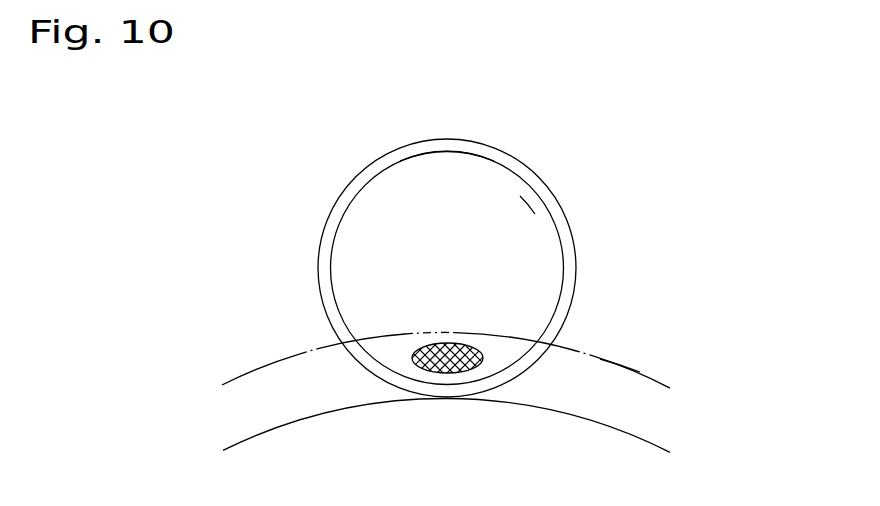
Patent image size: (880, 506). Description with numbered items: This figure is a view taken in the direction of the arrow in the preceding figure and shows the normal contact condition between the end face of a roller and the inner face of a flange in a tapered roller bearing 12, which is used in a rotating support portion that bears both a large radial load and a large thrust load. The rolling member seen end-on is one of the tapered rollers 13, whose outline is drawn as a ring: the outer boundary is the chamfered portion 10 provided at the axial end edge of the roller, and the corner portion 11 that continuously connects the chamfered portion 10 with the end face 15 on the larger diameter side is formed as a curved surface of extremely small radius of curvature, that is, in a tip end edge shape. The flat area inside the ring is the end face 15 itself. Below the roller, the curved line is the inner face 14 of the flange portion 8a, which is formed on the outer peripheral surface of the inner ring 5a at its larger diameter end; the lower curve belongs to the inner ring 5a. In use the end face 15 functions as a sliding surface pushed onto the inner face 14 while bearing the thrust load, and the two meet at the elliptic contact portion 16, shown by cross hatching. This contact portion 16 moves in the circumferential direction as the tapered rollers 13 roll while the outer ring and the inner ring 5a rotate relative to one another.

The chamfered portion 10 is at (518, 170).
The corner portion 11 is at (565, 260).
The tapered roller bearing 12 is at (628, 208).
The tapered rollers 13 is at (430, 182).
The inner face 14 is at (595, 363).
The end face 15 is at (518, 216).
The elliptic contact portion 16 is at (467, 345).
The flange portion 8a is at (633, 384).
The inner ring 5a is at (582, 430).